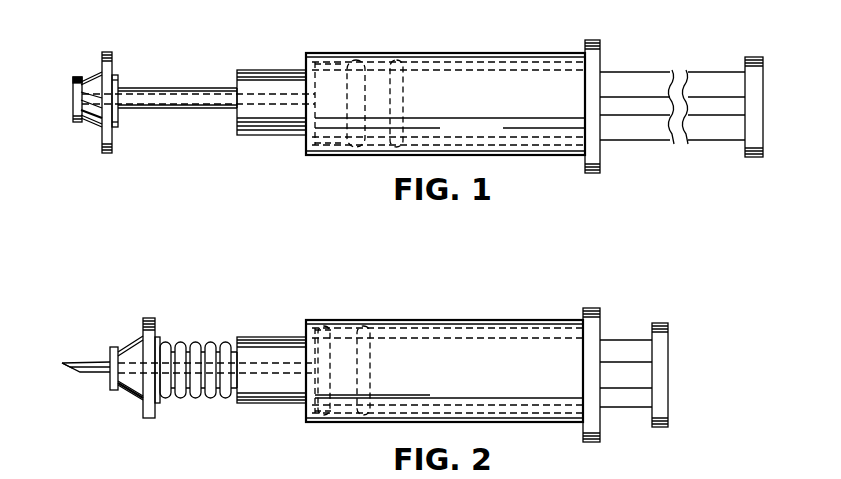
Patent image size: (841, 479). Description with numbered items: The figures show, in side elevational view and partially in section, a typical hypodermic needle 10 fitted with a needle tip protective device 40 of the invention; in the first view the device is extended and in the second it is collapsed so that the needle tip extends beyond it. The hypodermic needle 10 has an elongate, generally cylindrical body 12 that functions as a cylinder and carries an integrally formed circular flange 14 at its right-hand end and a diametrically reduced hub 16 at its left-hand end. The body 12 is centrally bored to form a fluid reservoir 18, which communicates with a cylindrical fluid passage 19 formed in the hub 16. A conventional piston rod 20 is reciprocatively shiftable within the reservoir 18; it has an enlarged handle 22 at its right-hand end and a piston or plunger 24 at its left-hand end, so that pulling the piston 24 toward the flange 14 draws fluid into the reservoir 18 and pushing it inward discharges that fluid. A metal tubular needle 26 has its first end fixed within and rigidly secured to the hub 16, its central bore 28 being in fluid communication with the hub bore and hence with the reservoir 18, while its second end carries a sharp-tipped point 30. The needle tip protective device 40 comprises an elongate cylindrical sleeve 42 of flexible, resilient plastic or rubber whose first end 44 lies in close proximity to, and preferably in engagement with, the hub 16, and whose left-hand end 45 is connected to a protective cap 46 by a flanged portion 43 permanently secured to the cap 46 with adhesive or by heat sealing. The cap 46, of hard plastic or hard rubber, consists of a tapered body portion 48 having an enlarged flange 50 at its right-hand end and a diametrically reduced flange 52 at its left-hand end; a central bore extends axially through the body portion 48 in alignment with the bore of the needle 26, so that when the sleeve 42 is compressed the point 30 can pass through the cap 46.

In FIG. 1, the hypodermic needle 10 is at (556, 42).
In FIG. 2, the hypodermic needle 10 is at (549, 307).
In FIG. 1, the body 12 is at (467, 56).
In FIG. 2, the body 12 is at (368, 320).
In FIG. 1, the flange 14 is at (586, 174).
In FIG. 2, the flange 14 is at (593, 308).
In FIG. 1, the hub 16 is at (272, 138).
In FIG. 2, the hub 16 is at (285, 404).
In FIG. 1, the fluid reservoir 18 is at (322, 70).
In FIG. 2, the fluid reservoir 18 is at (492, 328).
In FIG. 1, the fluid passage 19 is at (278, 94).
In FIG. 2, the fluid passage 19 is at (280, 368).
In FIG. 1, the piston rod 20 is at (630, 76).
In FIG. 2, the piston rod 20 is at (622, 348).
In FIG. 1, the handle 22 is at (750, 160).
In FIG. 2, the handle 22 is at (660, 322).
In FIG. 1, the piston 24 is at (356, 62).
In FIG. 2, the piston 24 is at (320, 328).
In FIG. 1, the tubular needle 26 is at (216, 86).
In FIG. 2, the tubular needle 26 is at (85, 360).
In FIG. 1, the central bore 28 is at (163, 104).
In FIG. 2, the sharp-tipped point 30 is at (80, 374).
In FIG. 1, the needle tip protective device 40 is at (196, 62).
In FIG. 1, the sleeve 42 is at (175, 80).
In FIG. 2, the sleeve 42 is at (195, 342).
In FIG. 1, the flanged portion 43 is at (116, 74).
In FIG. 2, the flanged portion 43 is at (158, 400).
In FIG. 1, the first end 44 is at (240, 118).
In FIG. 2, the first end 44 is at (238, 400).
In FIG. 1, the left-hand end 45 is at (116, 122).
In FIG. 1, the protective cap 46 is at (88, 62).
In FIG. 2, the protective cap 46 is at (129, 342).
In FIG. 1, the tapered body portion 48 is at (86, 124).
In FIG. 2, the tapered body portion 48 is at (127, 396).
In FIG. 1, the enlarged flange 50 is at (108, 56).
In FIG. 2, the enlarged flange 50 is at (150, 318).
In FIG. 1, the diametrically reduced flange 52 is at (75, 80).
In FIG. 2, the diametrically reduced flange 52 is at (110, 382).